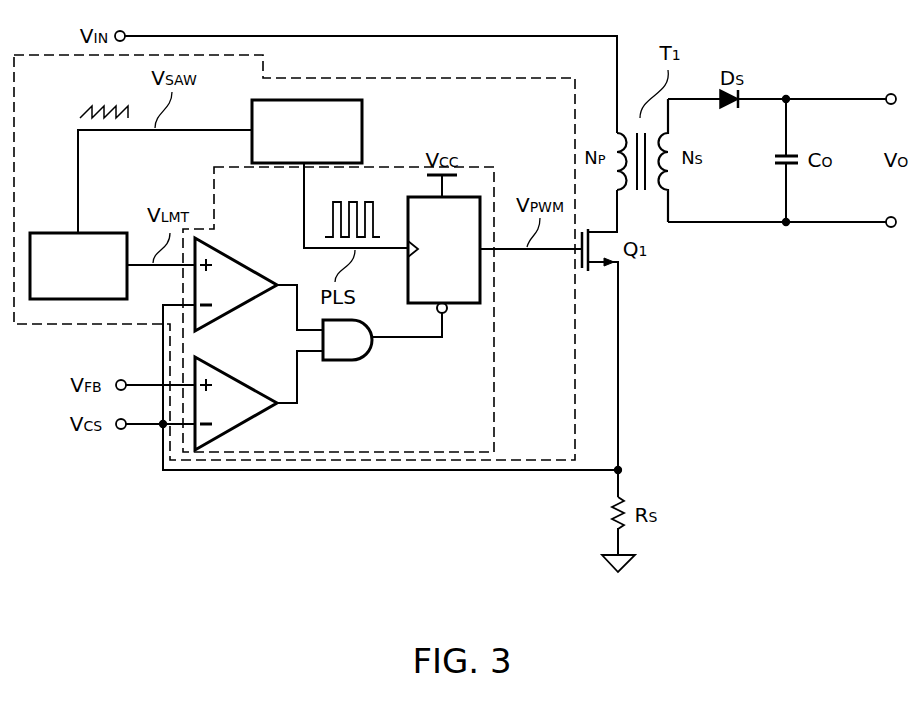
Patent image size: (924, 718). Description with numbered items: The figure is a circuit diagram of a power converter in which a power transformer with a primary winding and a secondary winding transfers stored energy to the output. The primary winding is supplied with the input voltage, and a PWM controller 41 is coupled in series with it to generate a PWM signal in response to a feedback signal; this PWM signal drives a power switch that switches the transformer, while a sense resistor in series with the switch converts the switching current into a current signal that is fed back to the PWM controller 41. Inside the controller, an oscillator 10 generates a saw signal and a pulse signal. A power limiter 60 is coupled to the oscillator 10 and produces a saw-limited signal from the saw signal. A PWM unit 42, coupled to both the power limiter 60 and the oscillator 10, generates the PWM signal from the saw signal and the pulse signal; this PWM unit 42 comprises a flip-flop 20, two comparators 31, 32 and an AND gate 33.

The oscillator 10 is at (305, 100).
The flip-flop 20 is at (480, 287).
The comparator 31 is at (244, 258).
The comparator 32 is at (245, 378).
The AND gate 33 is at (348, 361).
The PWM controller 41 is at (576, 338).
The PWM unit 42 is at (494, 415).
The power limiter 60 is at (78, 299).